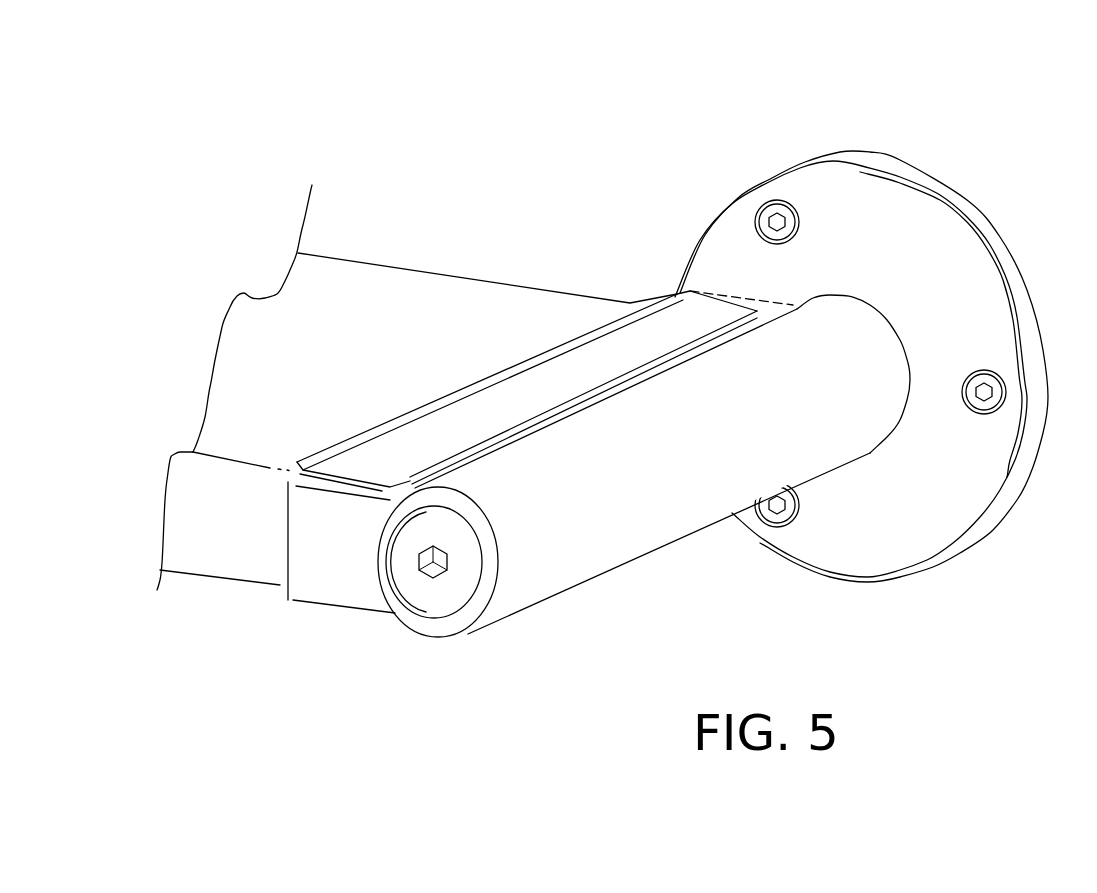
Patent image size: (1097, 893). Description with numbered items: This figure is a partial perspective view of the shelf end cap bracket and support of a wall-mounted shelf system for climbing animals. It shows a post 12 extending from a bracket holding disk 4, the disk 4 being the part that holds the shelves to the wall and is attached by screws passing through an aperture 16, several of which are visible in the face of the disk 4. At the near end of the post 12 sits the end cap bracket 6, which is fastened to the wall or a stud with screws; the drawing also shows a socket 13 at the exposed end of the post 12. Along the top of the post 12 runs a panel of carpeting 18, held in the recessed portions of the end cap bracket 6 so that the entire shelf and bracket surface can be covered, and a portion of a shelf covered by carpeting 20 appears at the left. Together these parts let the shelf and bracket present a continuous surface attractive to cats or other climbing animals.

The bracket holding disk 4 is at (840, 195).
The end cap bracket 6 is at (562, 555).
The post 12 is at (447, 598).
The hex socket 13 is at (420, 573).
The aperture 16 is at (773, 213).
The panel of carpeting 18 is at (600, 345).
The carpeting 20 is at (392, 290).